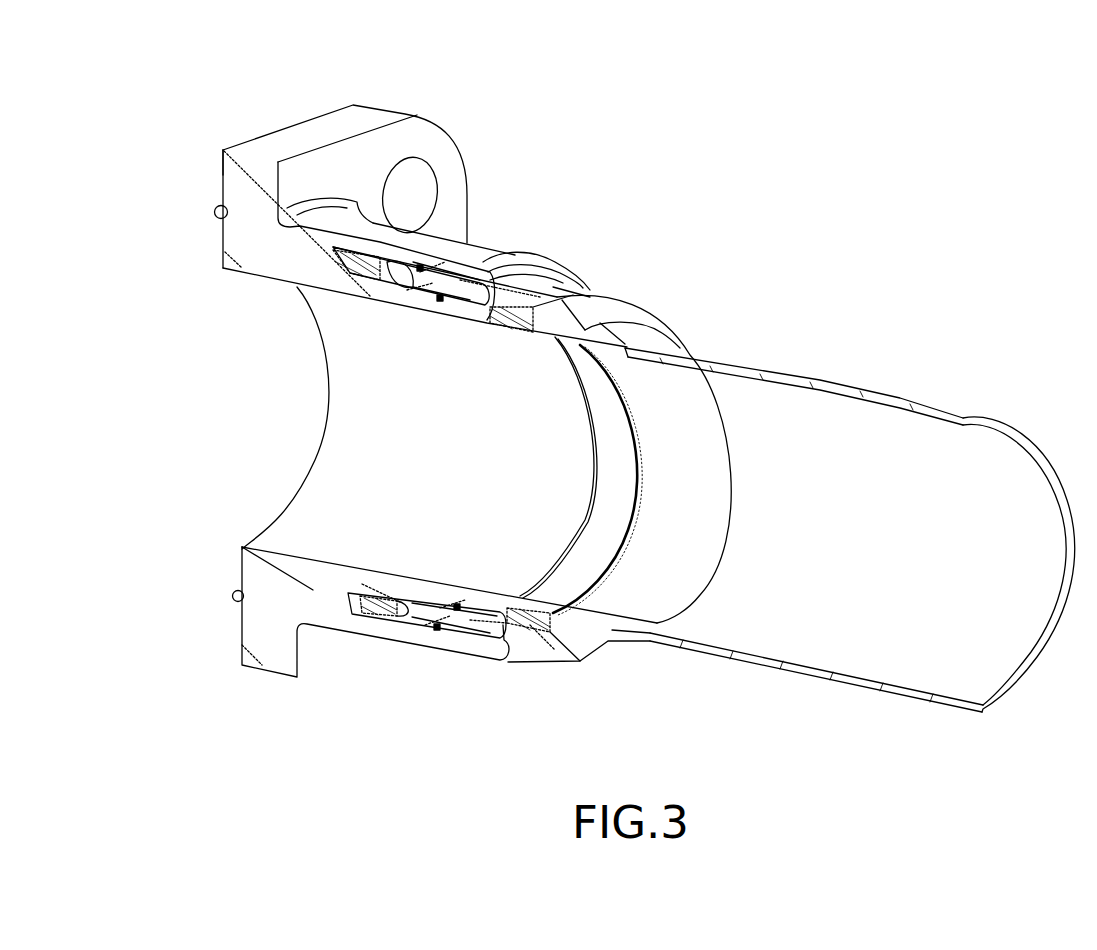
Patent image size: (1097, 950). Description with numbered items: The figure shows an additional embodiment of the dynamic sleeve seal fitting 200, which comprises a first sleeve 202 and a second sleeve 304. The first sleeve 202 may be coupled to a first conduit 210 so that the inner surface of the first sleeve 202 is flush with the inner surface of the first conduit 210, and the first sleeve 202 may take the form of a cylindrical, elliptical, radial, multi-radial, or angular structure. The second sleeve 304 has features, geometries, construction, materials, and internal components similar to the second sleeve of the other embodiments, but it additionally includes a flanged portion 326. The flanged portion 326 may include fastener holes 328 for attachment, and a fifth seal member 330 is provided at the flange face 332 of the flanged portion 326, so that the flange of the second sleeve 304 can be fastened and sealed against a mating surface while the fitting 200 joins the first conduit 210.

The dynamic sleeve seal fitting 200 is at (748, 73).
The first sleeve 202 is at (680, 248).
The first conduit 210 is at (910, 404).
The second sleeve 304 is at (537, 167).
The flanged portion 326 is at (369, 108).
The fastener holes 328 is at (437, 164).
The fifth seal member 330 is at (213, 212).
The flange face 332 is at (222, 173).